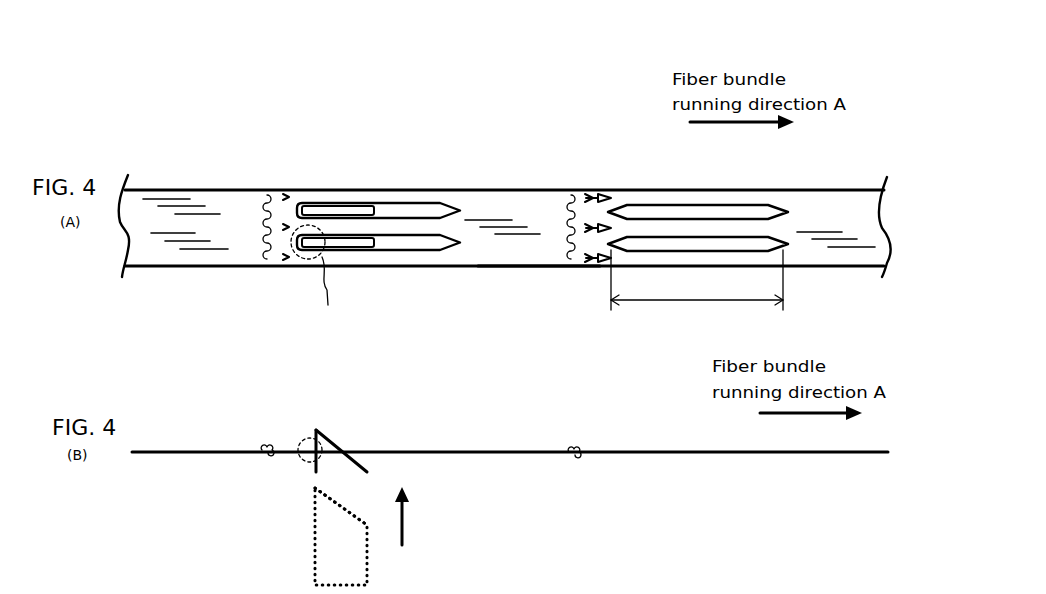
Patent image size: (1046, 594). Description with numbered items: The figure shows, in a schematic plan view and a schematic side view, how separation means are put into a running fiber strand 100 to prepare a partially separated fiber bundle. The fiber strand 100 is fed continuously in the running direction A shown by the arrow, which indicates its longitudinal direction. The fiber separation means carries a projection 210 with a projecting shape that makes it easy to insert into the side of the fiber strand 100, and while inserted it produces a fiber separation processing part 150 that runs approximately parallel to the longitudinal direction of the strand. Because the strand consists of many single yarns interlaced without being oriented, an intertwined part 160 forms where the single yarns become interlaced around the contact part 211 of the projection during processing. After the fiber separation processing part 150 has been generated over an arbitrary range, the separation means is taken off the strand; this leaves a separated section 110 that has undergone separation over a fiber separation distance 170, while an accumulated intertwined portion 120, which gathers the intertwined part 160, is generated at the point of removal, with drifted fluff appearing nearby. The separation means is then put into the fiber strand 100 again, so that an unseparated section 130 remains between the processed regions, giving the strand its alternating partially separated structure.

The fiber strand 100 is at (243, 181).
The separated section 110 is at (783, 187).
The accumulated intertwined portion 120 is at (597, 270).
The unseparated section 130 is at (600, 187).
The fiber separation processing part 150 is at (473, 187).
The intertwined part 160 is at (270, 262).
The fiber separation distance 170 is at (697, 280).
The projection 210 is at (298, 487).
The contact part 211 is at (308, 440).